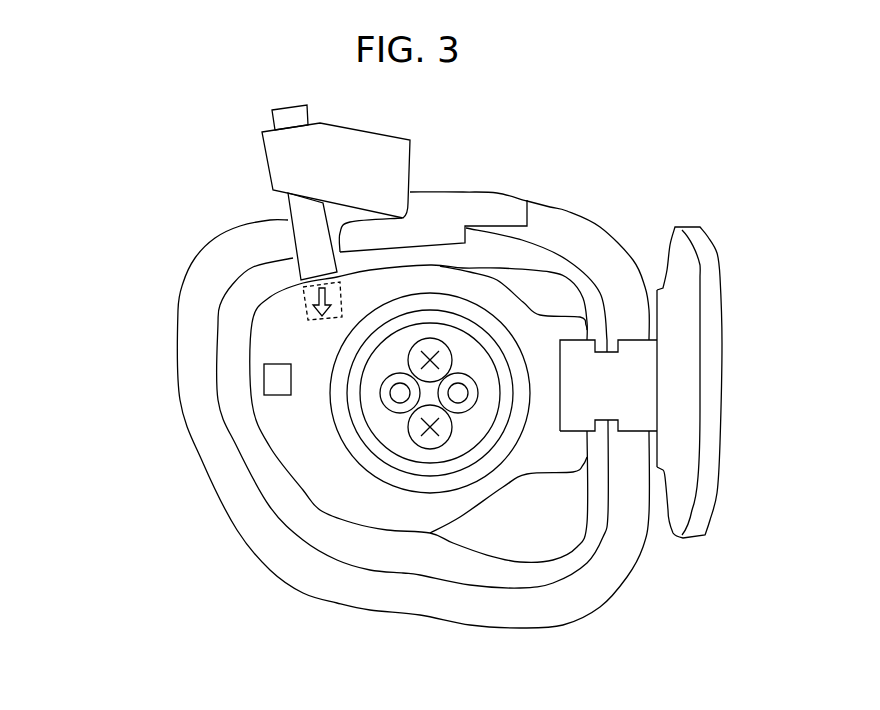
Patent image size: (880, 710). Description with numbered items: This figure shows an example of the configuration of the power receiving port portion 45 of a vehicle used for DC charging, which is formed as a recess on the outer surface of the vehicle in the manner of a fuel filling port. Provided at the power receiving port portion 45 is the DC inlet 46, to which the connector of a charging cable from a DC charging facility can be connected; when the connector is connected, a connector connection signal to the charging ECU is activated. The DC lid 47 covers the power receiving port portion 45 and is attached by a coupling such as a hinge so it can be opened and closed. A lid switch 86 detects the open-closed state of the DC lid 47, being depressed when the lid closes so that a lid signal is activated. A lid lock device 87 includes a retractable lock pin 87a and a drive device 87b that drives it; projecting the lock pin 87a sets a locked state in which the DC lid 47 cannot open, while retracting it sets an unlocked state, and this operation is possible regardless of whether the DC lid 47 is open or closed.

The power receiving port portion 45 is at (590, 215).
The DC inlet 46 is at (432, 477).
The DC lid 47 is at (708, 340).
The lid switch 86 is at (263, 382).
The lid lock device 87 is at (252, 212).
The lock pin 87a is at (312, 233).
The drive device 87b is at (290, 157).